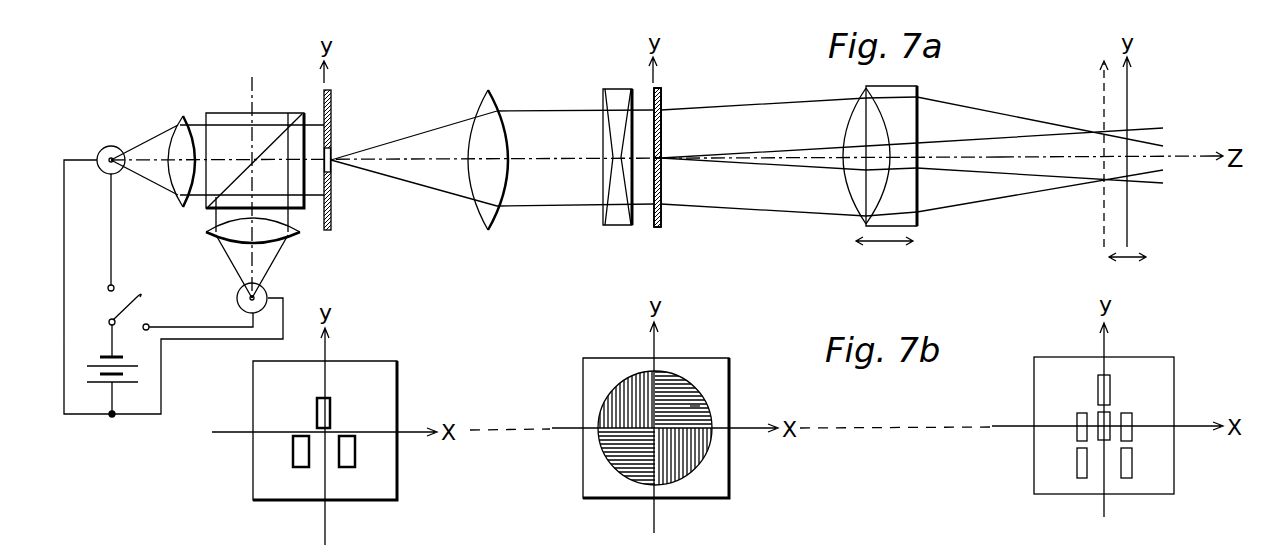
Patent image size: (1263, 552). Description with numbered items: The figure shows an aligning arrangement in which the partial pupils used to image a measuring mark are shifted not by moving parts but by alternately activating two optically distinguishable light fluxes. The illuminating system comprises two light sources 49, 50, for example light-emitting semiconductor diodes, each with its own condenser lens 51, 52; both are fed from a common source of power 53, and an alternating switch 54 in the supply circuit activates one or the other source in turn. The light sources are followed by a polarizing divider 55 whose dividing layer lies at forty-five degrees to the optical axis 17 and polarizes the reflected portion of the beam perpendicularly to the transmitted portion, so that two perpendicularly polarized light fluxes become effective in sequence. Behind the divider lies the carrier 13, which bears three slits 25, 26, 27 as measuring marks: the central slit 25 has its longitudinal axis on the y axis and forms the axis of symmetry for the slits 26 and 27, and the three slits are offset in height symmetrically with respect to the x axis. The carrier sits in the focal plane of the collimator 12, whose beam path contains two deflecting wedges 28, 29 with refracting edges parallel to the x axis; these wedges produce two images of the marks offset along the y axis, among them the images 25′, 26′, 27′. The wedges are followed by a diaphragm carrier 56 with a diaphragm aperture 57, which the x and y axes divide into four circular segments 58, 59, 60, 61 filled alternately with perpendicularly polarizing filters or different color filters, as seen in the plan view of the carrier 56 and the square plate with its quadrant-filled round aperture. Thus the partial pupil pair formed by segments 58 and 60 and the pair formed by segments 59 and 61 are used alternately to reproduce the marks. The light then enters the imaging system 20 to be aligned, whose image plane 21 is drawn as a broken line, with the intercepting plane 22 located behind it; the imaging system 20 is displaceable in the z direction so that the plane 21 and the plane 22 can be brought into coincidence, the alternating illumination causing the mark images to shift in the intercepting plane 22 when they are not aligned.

In FIG. 7A, the collimator 12 is at (487, 222).
In FIG. 7A, the carrier 13 is at (332, 97).
In FIG. 7B, the carrier 13 is at (380, 472).
In FIG. 7A, the optical axis 17 is at (1193, 160).
In FIG. 7A, the imaging system 20 is at (910, 200).
In FIG. 7A, the image plane 21 is at (1102, 92).
In FIG. 7B, the image plane 21 is at (1052, 378).
In FIG. 7A, the intercepting plane 22 is at (1130, 92).
In FIG. 7A, the slit 25 is at (333, 143).
In FIG. 7B, the slit 25 is at (327, 408).
In FIG. 7B, the slit 26 is at (303, 460).
In FIG. 7B, the slit 27 is at (345, 460).
In FIG. 7A, the deflecting wedge 28 is at (616, 95).
In FIG. 7A, the deflecting wedge 29 is at (616, 218).
In FIG. 7A, the light source 49 is at (266, 293).
In FIG. 7A, the light source 50 is at (109, 146).
In FIG. 7A, the condenser lens 51 is at (272, 233).
In FIG. 7A, the condenser lens 52 is at (181, 117).
In FIG. 7A, the source of power 53 is at (140, 372).
In FIG. 7A, the alternating switch 54 is at (156, 284).
In FIG. 7A, the polarizing divider 55 is at (270, 140).
In FIG. 7A, the diaphragm carrier 56 is at (659, 229).
In FIG. 7B, the diaphragm carrier 56 is at (710, 482).
In FIG. 7A, the diaphragm aperture 57 is at (662, 100).
In FIG. 7B, the diaphragm aperture 57 is at (692, 380).
In FIG. 7A, the circular segment 58 is at (708, 111).
In FIG. 7B, the circular segment 58 is at (688, 408).
In FIG. 7A, the circular segment 59 is at (708, 207).
In FIG. 7B, the circular segment 59 is at (688, 447).
In FIG. 7A, the circular segment 60 is at (662, 182).
In FIG. 7B, the circular segment 60 is at (620, 452).
In FIG. 7A, the circular segment 61 is at (662, 130).
In FIG. 7B, the circular segment 61 is at (625, 407).
In FIG. 7B, the image of slit 25′ is at (1108, 392).
In FIG. 7B, the image of slit 26′ is at (1080, 420).
In FIG. 7B, the image of slit 27′ is at (1127, 420).